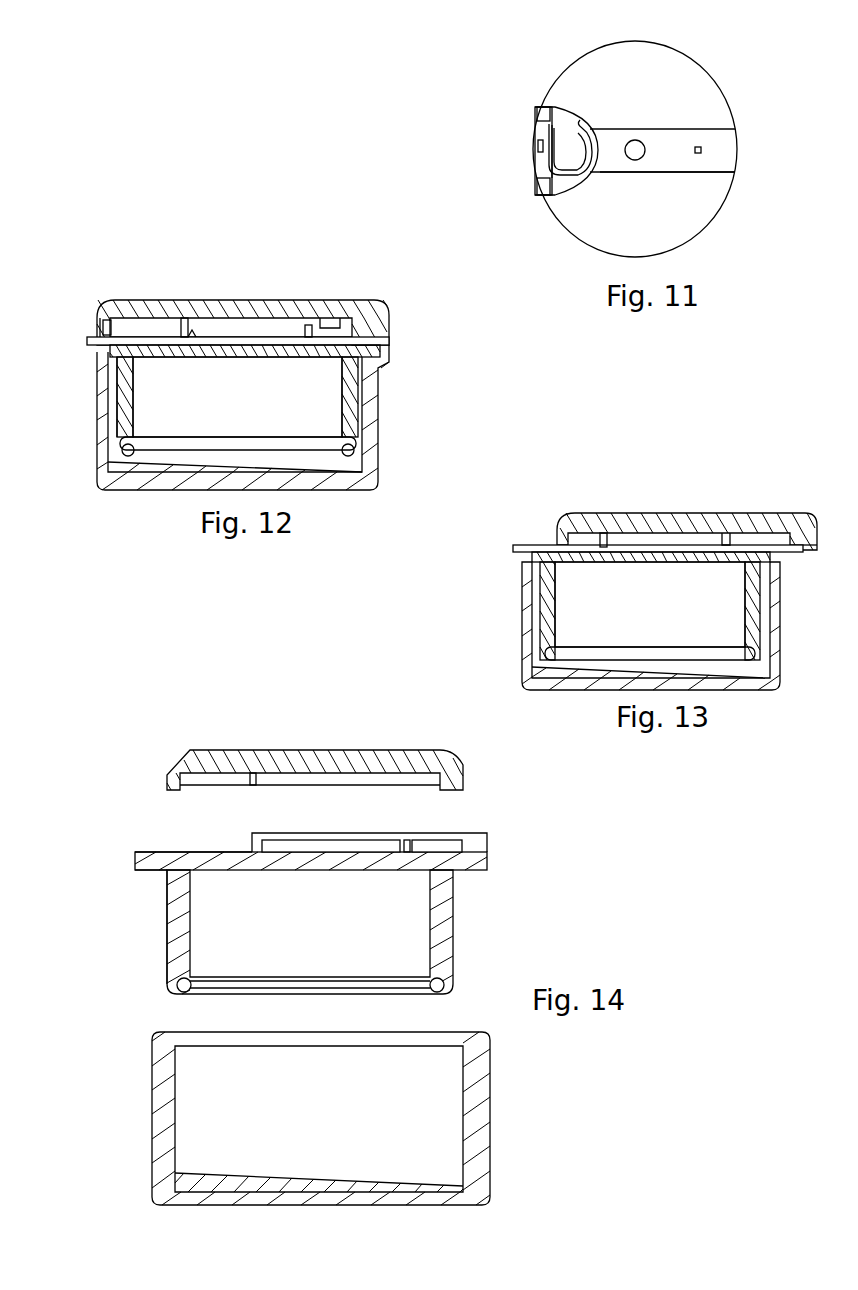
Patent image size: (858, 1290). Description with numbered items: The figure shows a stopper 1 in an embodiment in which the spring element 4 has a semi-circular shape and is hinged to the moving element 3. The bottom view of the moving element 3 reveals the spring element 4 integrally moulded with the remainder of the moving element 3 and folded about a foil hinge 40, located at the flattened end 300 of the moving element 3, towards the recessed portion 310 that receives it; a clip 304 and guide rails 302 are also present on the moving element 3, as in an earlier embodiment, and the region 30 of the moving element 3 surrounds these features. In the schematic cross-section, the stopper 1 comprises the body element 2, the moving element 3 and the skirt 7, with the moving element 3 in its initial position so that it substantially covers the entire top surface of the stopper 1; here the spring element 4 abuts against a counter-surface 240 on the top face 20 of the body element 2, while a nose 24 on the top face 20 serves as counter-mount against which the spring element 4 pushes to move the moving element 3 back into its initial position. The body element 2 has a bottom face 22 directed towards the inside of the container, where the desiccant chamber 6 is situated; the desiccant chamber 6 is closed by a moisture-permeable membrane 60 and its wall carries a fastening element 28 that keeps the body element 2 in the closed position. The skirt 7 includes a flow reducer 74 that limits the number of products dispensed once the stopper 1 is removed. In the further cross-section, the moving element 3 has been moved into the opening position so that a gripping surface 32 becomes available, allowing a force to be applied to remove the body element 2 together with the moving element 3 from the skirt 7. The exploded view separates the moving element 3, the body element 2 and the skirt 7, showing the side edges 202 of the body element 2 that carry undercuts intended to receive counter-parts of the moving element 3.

In FIG. 12, the stopper 1 is at (396, 298).
In FIG. 13, the stopper 1 is at (772, 482).
In FIG. 12, the body element 2 is at (358, 378).
In FIG. 13, the body element 2 is at (548, 625).
In FIG. 14, the body element 2 is at (450, 930).
In FIG. 11, the moving element 3 is at (675, 88).
In FIG. 12, the moving element 3 is at (288, 300).
In FIG. 13, the moving element 3 is at (715, 525).
In FIG. 14, the moving element 3 is at (370, 760).
In FIG. 11, the spring element 4 is at (565, 198).
In FIG. 12, the spring element 4 is at (186, 330).
In FIG. 13, the spring element 4 is at (605, 535).
In FIG. 14, the spring element 4 is at (262, 773).
In FIG. 12, the desiccant chamber 6 is at (237, 397).
In FIG. 12, the skirt 7 is at (370, 450).
In FIG. 13, the skirt 7 is at (770, 650).
In FIG. 14, the skirt 7 is at (475, 1140).
In FIG. 12, the top face 20 is at (130, 330).
In FIG. 13, the top face 20 is at (540, 545).
In FIG. 14, the top face 20 is at (140, 852).
In FIG. 14, the bottom face 22 is at (150, 870).
In FIG. 12, the nose 24 is at (310, 330).
In FIG. 14, the nose 24 is at (407, 850).
In FIG. 12, the fastening element 28 is at (110, 380).
In FIG. 14, the fastening element 28 is at (165, 900).
In FIG. 11, the lid region 30 is at (707, 113).
In FIG. 13, the gripping surface 32 is at (802, 562).
In FIG. 11, the foil hinge 40 is at (537, 135).
In FIG. 12, the foil hinge 40 is at (100, 323).
In FIG. 12, the moisture-permeable membrane 60 is at (312, 452).
In FIG. 12, the flow reducer 74 is at (180, 482).
In FIG. 14, the flow reducer 74 is at (240, 1197).
In FIG. 14, the side edges 202 is at (325, 848).
In FIG. 12, the counter-surface 240 is at (194, 340).
In FIG. 14, the counter-surface 240 is at (265, 852).
In FIG. 11, the flattened end 300 is at (528, 153).
In FIG. 12, the flattened end 300 is at (93, 312).
In FIG. 11, the guide rails 302 is at (683, 177).
In FIG. 11, the clip 304 is at (705, 150).
In FIG. 12, the clip 304 is at (330, 335).
In FIG. 11, the recessed portion 310 is at (725, 142).